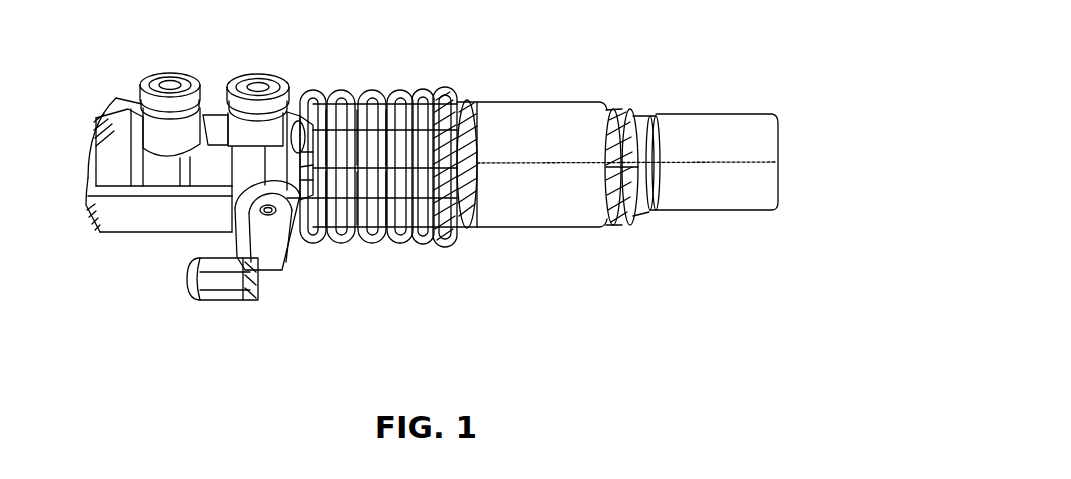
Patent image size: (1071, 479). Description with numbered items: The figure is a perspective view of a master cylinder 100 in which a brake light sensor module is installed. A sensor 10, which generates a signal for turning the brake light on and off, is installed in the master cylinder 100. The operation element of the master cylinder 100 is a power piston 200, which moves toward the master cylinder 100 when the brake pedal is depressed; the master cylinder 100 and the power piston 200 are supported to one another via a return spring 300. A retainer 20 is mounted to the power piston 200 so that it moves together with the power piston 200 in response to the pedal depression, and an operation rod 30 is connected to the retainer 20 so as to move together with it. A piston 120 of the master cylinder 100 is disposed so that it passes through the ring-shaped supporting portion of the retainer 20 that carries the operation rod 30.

The master cylinder 100 is at (123, 221).
The sensor 10 is at (276, 268).
The return spring 300 is at (343, 97).
The piston 120 is at (397, 140).
The operation rod 30 is at (373, 212).
The retainer 20 is at (450, 243).
The power piston 200 is at (505, 120).